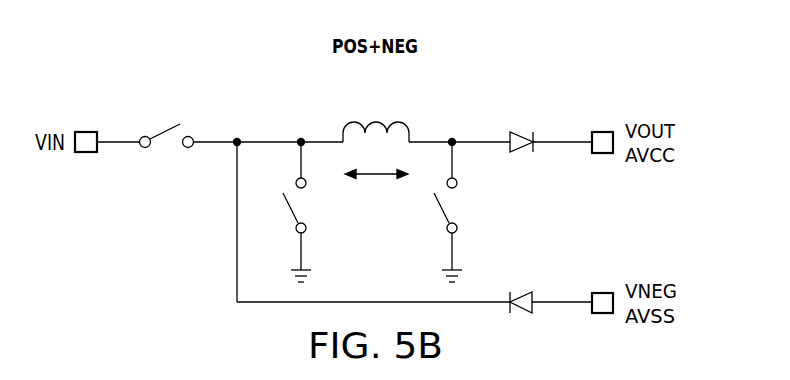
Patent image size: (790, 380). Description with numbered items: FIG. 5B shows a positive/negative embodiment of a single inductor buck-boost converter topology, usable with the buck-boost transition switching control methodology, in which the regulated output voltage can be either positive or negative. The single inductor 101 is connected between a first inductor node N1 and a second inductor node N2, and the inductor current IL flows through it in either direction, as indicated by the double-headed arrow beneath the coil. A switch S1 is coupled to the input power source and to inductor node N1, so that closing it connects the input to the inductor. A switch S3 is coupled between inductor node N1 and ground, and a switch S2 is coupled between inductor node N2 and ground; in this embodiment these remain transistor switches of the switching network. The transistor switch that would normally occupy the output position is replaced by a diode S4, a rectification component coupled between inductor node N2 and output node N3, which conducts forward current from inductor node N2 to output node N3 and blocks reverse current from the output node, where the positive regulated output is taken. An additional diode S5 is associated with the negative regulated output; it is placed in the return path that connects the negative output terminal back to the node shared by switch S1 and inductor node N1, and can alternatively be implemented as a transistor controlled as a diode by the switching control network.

The single inductor 101 is at (367, 125).
The switch S1 is at (167, 124).
The switch S2 is at (459, 212).
The transistor switch S3 is at (283, 212).
The diode S4 is at (521, 128).
The diode S5 is at (521, 317).
The inductor node N1 is at (302, 128).
The inductor node N2 is at (450, 128).
The output node N3 is at (601, 128).
The inductor current IL is at (376, 163).